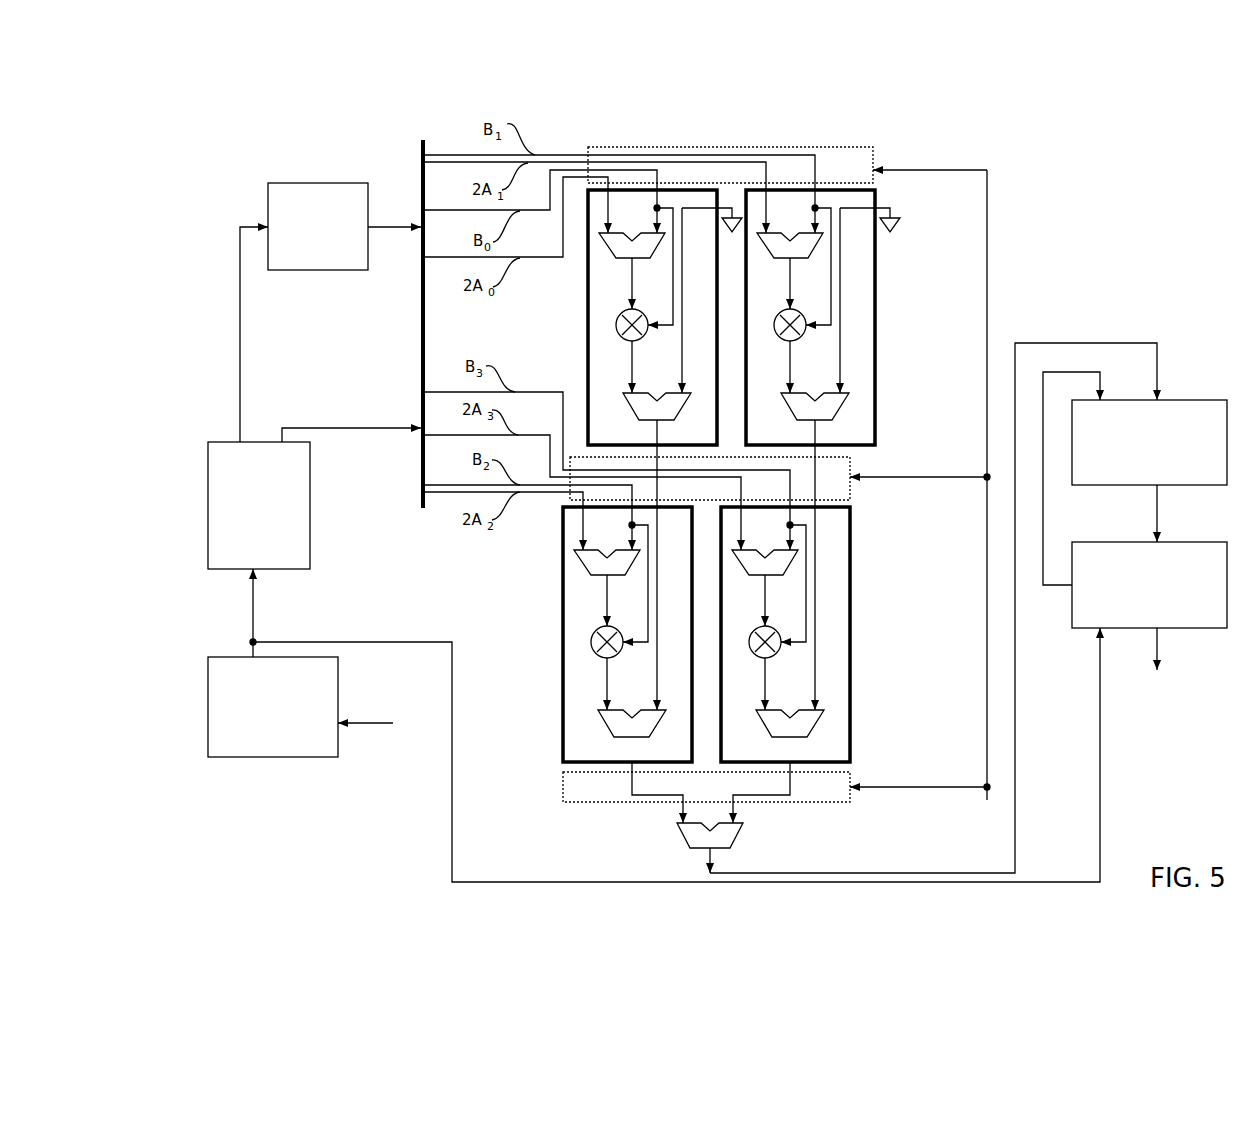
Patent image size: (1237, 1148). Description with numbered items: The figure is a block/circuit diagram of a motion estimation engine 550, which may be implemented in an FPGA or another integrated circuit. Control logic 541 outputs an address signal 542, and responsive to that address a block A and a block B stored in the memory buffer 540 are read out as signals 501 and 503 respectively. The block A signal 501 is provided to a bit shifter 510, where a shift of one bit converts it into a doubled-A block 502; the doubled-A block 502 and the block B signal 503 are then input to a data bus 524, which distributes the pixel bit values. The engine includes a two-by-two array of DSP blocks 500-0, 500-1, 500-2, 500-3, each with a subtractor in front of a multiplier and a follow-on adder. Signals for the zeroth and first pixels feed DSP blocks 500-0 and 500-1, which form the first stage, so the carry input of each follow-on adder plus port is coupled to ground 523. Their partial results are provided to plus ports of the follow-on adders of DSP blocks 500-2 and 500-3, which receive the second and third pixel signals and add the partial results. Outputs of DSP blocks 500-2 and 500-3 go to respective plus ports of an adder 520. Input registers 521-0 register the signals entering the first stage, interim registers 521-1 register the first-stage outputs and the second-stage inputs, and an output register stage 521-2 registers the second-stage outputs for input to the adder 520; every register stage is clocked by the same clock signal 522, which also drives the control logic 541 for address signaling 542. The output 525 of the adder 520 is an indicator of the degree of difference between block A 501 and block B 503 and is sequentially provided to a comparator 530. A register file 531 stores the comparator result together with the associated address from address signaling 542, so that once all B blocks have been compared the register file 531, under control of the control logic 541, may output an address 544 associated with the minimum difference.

The signal (block A) 501 is at (240, 225).
The 2A block 502 is at (393, 225).
The signal (block B) 503 is at (365, 426).
The bit shifter 510 is at (304, 261).
The adder 520 is at (742, 832).
The input registers 521-0 is at (875, 157).
The interim registers 521-1 is at (852, 497).
The output register stage 521-2 is at (852, 773).
The clock signal 522 is at (393, 723).
The ground 523 is at (905, 233).
The data bus 524 is at (420, 504).
The output 525 is at (708, 862).
The comparator 530 is at (1136, 470).
The register file 531 is at (1136, 612).
The memory buffer 540 is at (245, 553).
The control logic 541 is at (259, 742).
The address signal 542 is at (258, 618).
The address 544 is at (1160, 672).
The motion estimation engine 550 is at (312, 837).
The DSP block 500-0 is at (586, 338).
The DSP block 500-1 is at (876, 328).
The DSP block 500-2 is at (562, 643).
The DSP block 500-3 is at (851, 633).